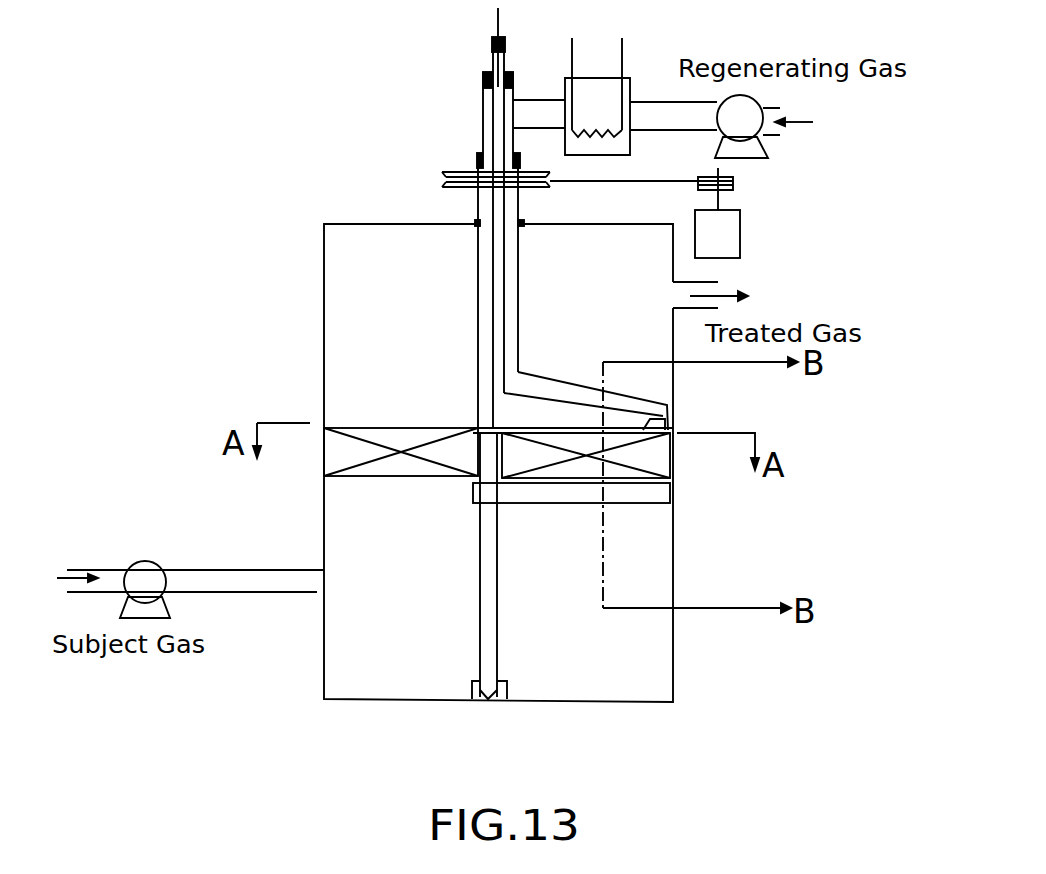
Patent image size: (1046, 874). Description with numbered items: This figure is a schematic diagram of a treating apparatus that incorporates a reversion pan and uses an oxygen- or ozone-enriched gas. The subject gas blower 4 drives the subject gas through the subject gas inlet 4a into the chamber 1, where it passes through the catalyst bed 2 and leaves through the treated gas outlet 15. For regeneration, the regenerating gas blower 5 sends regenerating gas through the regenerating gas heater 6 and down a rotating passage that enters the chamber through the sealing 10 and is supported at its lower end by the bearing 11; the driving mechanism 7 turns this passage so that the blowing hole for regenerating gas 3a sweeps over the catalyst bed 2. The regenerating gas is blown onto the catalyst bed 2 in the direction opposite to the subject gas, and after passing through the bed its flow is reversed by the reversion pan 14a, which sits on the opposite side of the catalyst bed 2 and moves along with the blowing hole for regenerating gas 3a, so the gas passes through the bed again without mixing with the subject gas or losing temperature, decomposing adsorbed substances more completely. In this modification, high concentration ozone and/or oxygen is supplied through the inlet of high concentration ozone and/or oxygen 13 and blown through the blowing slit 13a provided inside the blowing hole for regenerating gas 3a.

The chamber 1 is at (673, 563).
The catalyst bed 2 is at (643, 460).
The blowing hole for regenerating gas 3a is at (657, 403).
The subject gas blower 4 is at (147, 567).
The subject gas inlet 4a is at (317, 598).
The regenerating gas blower 5 is at (728, 127).
The regenerating gas heater 6 is at (565, 82).
The driving mechanism 7 is at (740, 223).
The sealing 10 is at (480, 157).
The bearing 11 is at (488, 702).
The inlet of high concentration ozone and/or oxygen 13 is at (497, 18).
The blowing slit for high concentration ozone and/or oxygen 13a is at (677, 417).
The reversion pan 14a is at (647, 498).
The treated gas outlet 15 is at (670, 283).